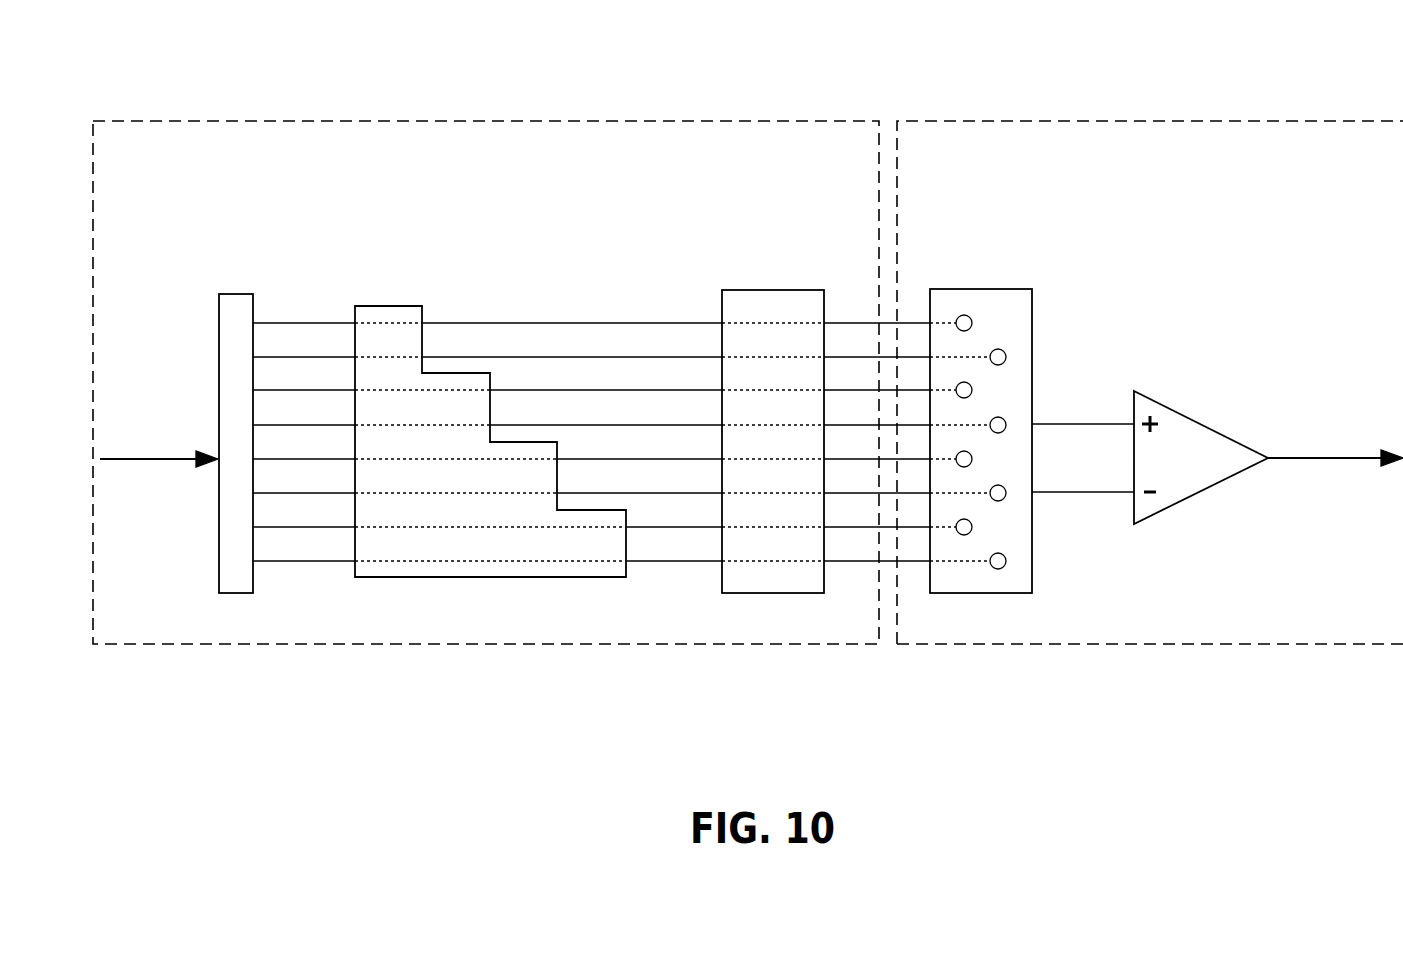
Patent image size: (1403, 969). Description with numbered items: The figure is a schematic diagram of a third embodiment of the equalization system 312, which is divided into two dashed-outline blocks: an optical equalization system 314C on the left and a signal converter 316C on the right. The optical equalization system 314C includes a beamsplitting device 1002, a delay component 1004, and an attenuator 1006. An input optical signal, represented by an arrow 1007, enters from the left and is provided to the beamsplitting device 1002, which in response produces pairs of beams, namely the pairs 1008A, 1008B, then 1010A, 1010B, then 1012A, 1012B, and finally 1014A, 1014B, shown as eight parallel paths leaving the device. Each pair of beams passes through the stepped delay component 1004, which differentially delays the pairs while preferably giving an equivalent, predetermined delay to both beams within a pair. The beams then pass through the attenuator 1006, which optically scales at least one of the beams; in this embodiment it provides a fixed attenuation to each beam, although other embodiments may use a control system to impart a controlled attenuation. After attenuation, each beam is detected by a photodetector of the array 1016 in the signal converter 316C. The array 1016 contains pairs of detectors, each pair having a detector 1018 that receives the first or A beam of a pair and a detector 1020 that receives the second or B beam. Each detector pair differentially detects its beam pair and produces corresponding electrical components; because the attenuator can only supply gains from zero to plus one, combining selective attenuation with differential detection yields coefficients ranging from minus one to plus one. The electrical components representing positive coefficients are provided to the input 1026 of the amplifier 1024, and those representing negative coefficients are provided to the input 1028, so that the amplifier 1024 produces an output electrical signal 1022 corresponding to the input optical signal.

The equalization system 312 is at (182, 73).
The optical equalization system 314C is at (699, 167).
The signal converter 316C is at (1298, 167).
The beamsplitting device 1002 is at (225, 293).
The delay component 1004 is at (382, 305).
The attenuator 1006 is at (760, 290).
The arrow 1007 is at (112, 460).
The beam 1008A is at (308, 323).
The beam 1008B is at (333, 357).
The beam 1010A is at (303, 390).
The beam 1010B is at (277, 425).
The beam 1012A is at (282, 459).
The beam 1012B is at (307, 459).
The beam 1014A is at (325, 528).
The beam 1014B is at (293, 561).
The photodetector array 1016 is at (1032, 385).
The detector 1018 is at (964, 315).
The detector 1020 is at (998, 349).
The output electrical signal 1022 is at (1350, 457).
The amplifier 1024 is at (1178, 410).
The input 1026 is at (1132, 410).
The input 1028 is at (1130, 503).